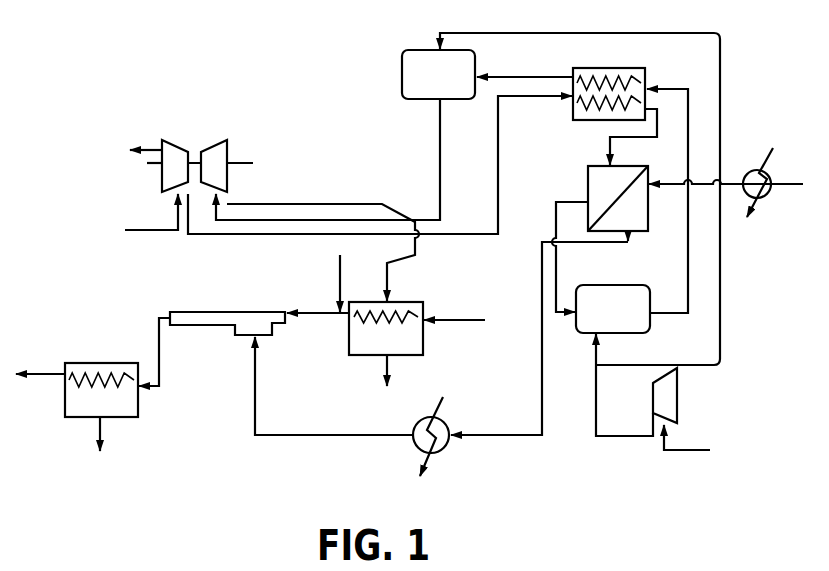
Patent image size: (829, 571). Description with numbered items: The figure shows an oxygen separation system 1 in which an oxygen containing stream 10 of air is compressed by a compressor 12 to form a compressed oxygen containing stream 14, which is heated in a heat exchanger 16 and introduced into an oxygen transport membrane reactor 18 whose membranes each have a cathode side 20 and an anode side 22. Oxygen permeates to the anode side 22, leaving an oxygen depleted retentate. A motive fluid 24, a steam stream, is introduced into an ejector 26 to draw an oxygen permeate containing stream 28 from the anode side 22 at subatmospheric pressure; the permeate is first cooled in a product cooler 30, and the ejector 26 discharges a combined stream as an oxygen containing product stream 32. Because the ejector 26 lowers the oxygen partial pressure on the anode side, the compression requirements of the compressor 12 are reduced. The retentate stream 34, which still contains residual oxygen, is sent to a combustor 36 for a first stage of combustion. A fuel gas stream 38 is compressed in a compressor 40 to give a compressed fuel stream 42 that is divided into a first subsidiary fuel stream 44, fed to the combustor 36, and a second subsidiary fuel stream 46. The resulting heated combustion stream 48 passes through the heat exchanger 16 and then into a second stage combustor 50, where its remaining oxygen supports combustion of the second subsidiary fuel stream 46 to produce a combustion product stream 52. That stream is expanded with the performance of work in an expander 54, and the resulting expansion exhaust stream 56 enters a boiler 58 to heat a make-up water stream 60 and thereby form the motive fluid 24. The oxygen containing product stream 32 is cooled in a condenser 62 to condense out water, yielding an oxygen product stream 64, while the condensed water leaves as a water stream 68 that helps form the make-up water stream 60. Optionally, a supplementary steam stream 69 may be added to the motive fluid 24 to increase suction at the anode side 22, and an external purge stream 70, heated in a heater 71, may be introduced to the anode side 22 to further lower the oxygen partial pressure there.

The oxygen separation system 1 is at (329, 84).
The oxygen containing stream 10 is at (157, 232).
The compressor 12 is at (173, 154).
The compressed oxygen containing stream 14 is at (242, 235).
The heat exchanger 16 is at (621, 68).
The oxygen transport membrane reactor 18 is at (588, 178).
The cathode side 20 is at (597, 172).
The anode side 22 is at (645, 203).
The motive fluid 24 is at (315, 312).
The ejector 26 is at (211, 326).
The oxygen permeate containing stream 28 is at (542, 401).
The product cooler 30 is at (419, 447).
The oxygen containing product stream 32 is at (159, 336).
The retentate stream 34 is at (556, 218).
The combustor 36 is at (618, 285).
The fuel gas stream 38 is at (684, 451).
The compressor 40 is at (673, 398).
The compressed fuel stream 42 is at (609, 437).
The first subsidiary fuel stream 44 is at (596, 352).
The second subsidiary fuel stream 46 is at (720, 322).
The heated combustion stream 48 is at (689, 284).
The combustor 50 is at (415, 63).
The combustion product stream 52 is at (440, 148).
The expander 54 is at (214, 154).
The expansion exhaust stream 56 is at (310, 203).
The boiler 58 is at (355, 356).
The make-up water stream 60 is at (463, 320).
The condenser 62 is at (73, 398).
The oxygen product stream 64 is at (41, 372).
The water stream 68 is at (102, 430).
The supplementary steam stream 69 is at (346, 262).
The external purge stream 70 is at (786, 186).
The heater 71 is at (748, 173).